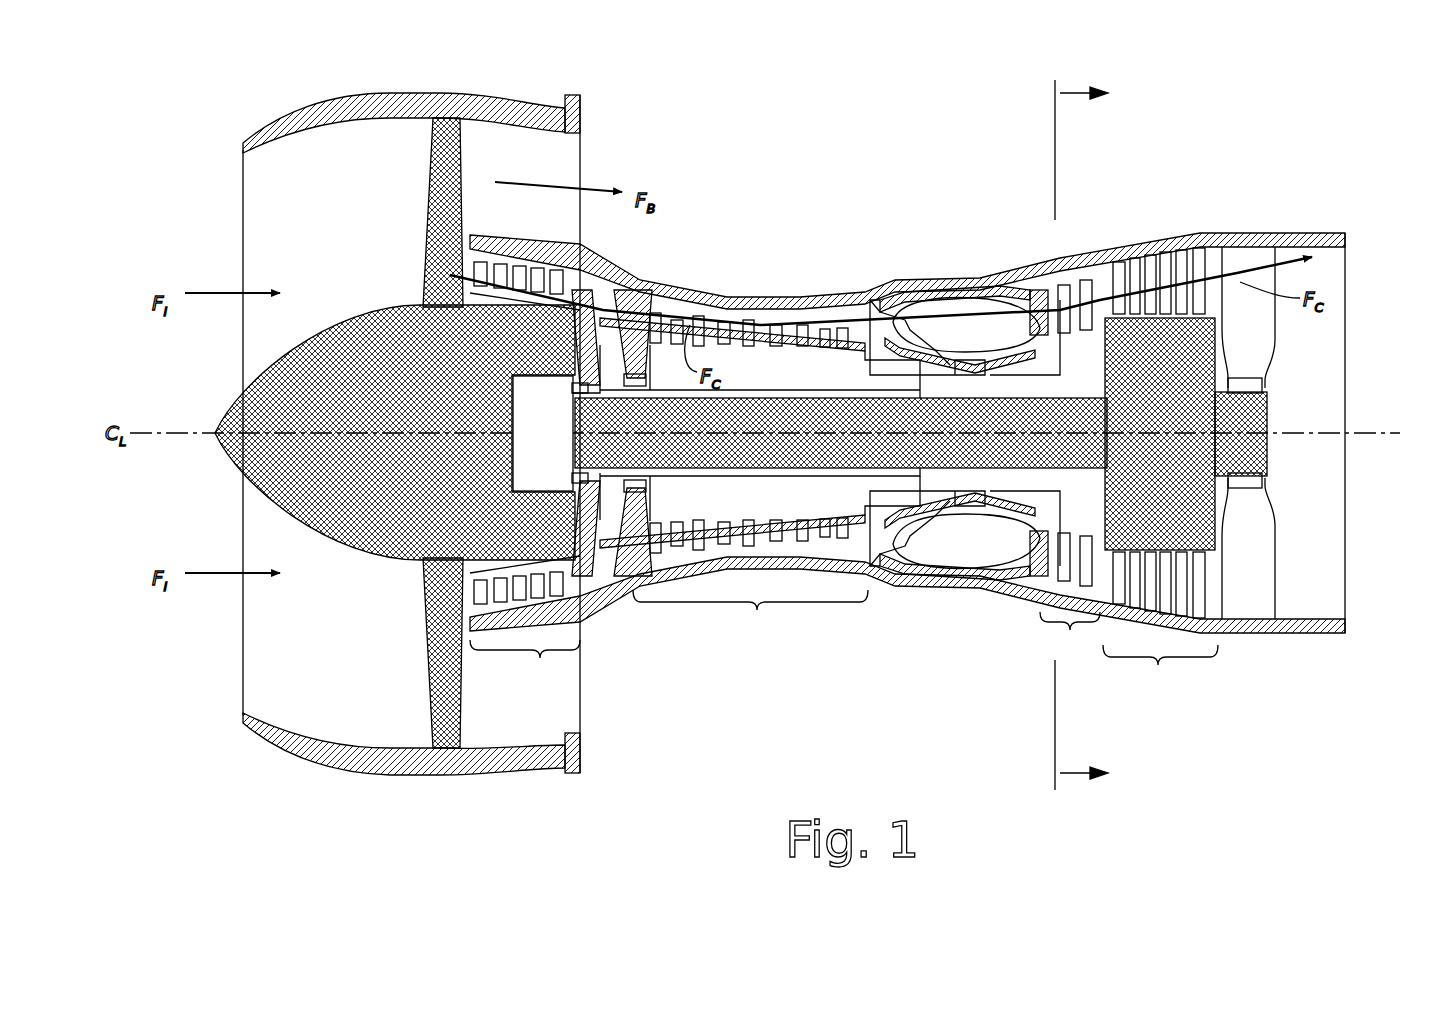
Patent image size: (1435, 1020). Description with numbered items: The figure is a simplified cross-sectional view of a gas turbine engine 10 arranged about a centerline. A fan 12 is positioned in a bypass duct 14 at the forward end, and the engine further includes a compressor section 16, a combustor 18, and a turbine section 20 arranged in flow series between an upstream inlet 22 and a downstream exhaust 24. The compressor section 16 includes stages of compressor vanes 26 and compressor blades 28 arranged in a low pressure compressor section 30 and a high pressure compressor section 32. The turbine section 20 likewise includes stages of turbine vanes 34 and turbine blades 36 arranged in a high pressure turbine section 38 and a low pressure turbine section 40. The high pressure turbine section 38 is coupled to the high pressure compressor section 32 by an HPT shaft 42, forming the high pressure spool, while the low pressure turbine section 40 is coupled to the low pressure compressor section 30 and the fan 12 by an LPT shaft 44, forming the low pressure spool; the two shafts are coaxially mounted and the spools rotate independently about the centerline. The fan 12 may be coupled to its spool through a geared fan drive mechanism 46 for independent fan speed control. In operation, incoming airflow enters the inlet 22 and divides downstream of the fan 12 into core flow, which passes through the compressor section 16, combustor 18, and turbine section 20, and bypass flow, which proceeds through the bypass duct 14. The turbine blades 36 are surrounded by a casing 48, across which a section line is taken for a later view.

The gas turbine engine 10 is at (1245, 140).
The fan 12 is at (443, 258).
The bypass duct 14 is at (575, 150).
The compressor section 16 is at (768, 710).
The combustor 18 is at (960, 322).
The turbine section 20 is at (1100, 682).
The inlet 22 is at (200, 228).
The exhaust 24 is at (1325, 370).
The compressor vanes 26 is at (765, 297).
The compressor blades 28 is at (752, 526).
The low pressure compressor section 30 is at (560, 660).
The high pressure compressor section 32 is at (760, 482).
The turbine vanes 34 is at (1040, 292).
The turbine blades 36 is at (1077, 285).
The high pressure turbine section 38 is at (1070, 633).
The low pressure turbine section 40 is at (1160, 472).
The HPT shaft 42 is at (930, 370).
The LPT shaft 44 is at (1250, 440).
The geared fan drive mechanism 46 is at (543, 433).
The casing 48 is at (718, 300).